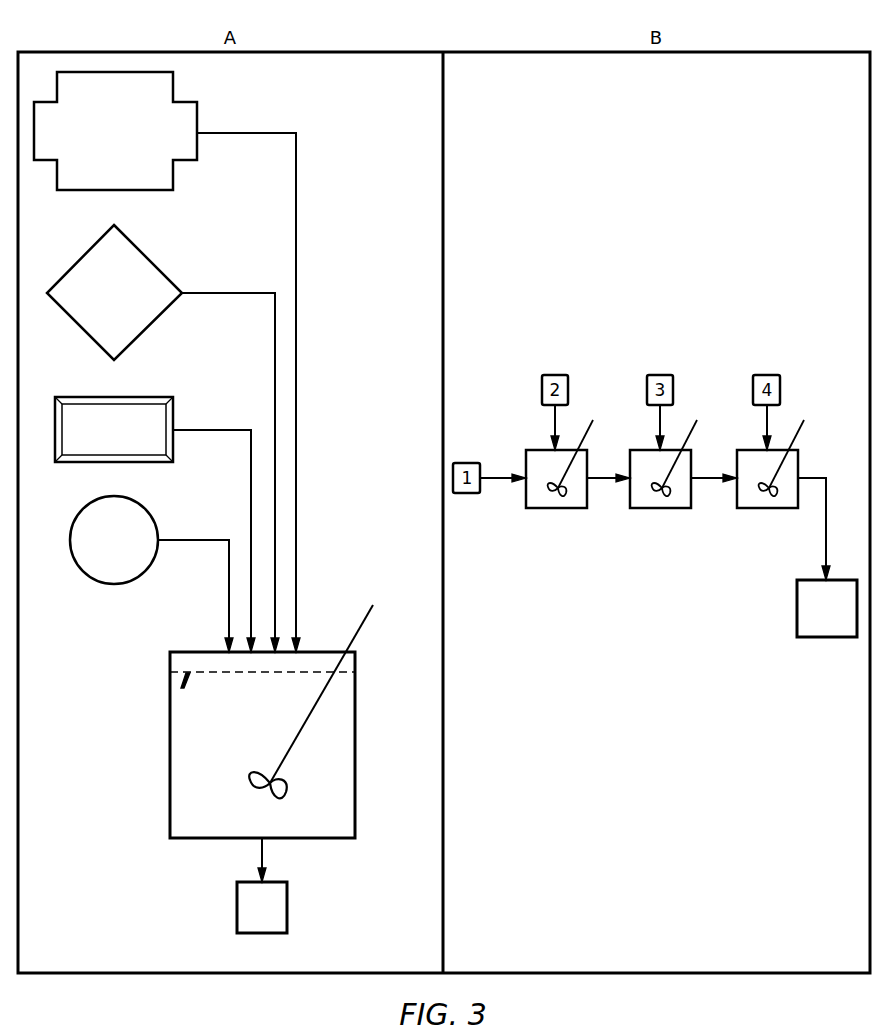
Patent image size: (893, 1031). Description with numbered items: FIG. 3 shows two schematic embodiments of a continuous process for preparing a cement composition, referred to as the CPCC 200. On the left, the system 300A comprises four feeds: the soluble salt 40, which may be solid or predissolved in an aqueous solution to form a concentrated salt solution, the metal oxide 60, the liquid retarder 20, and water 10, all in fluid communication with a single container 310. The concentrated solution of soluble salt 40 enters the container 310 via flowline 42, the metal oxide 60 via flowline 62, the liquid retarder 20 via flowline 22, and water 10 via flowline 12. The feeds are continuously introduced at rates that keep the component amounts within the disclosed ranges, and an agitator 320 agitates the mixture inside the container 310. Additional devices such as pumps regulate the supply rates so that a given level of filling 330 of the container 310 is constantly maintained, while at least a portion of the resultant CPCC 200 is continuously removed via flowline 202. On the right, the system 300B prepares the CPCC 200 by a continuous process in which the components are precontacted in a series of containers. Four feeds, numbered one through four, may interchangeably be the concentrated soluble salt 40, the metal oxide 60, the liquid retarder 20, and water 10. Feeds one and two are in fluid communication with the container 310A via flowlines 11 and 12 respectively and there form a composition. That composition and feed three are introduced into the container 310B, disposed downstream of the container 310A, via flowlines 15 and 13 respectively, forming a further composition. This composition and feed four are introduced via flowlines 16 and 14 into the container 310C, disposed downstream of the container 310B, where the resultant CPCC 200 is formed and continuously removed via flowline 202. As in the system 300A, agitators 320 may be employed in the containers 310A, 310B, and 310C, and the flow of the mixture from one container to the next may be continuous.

The water 10 is at (118, 497).
The flowline 12 is at (207, 540).
The liquid retarder 20 is at (115, 397).
The flowline 22 is at (229, 430).
The soluble salt 40 is at (173, 80).
The flowline 42 is at (265, 133).
The metal oxide 60 is at (136, 247).
The flowline 62 is at (240, 293).
The CPCC 200 is at (237, 908).
The flowline 202 is at (262, 855).
The system 300A is at (325, 108).
The system 300B is at (747, 320).
The container 310 is at (355, 744).
The container 310A is at (540, 508).
The container 310B is at (645, 508).
The container 310C is at (790, 508).
The agitator 320 is at (362, 625).
The level of filling 330 is at (181, 688).
The flowline 11 is at (492, 478).
The flowline 13 is at (671, 427).
The flowline 14 is at (778, 427).
The flowline 15 is at (600, 478).
The flowline 16 is at (705, 478).